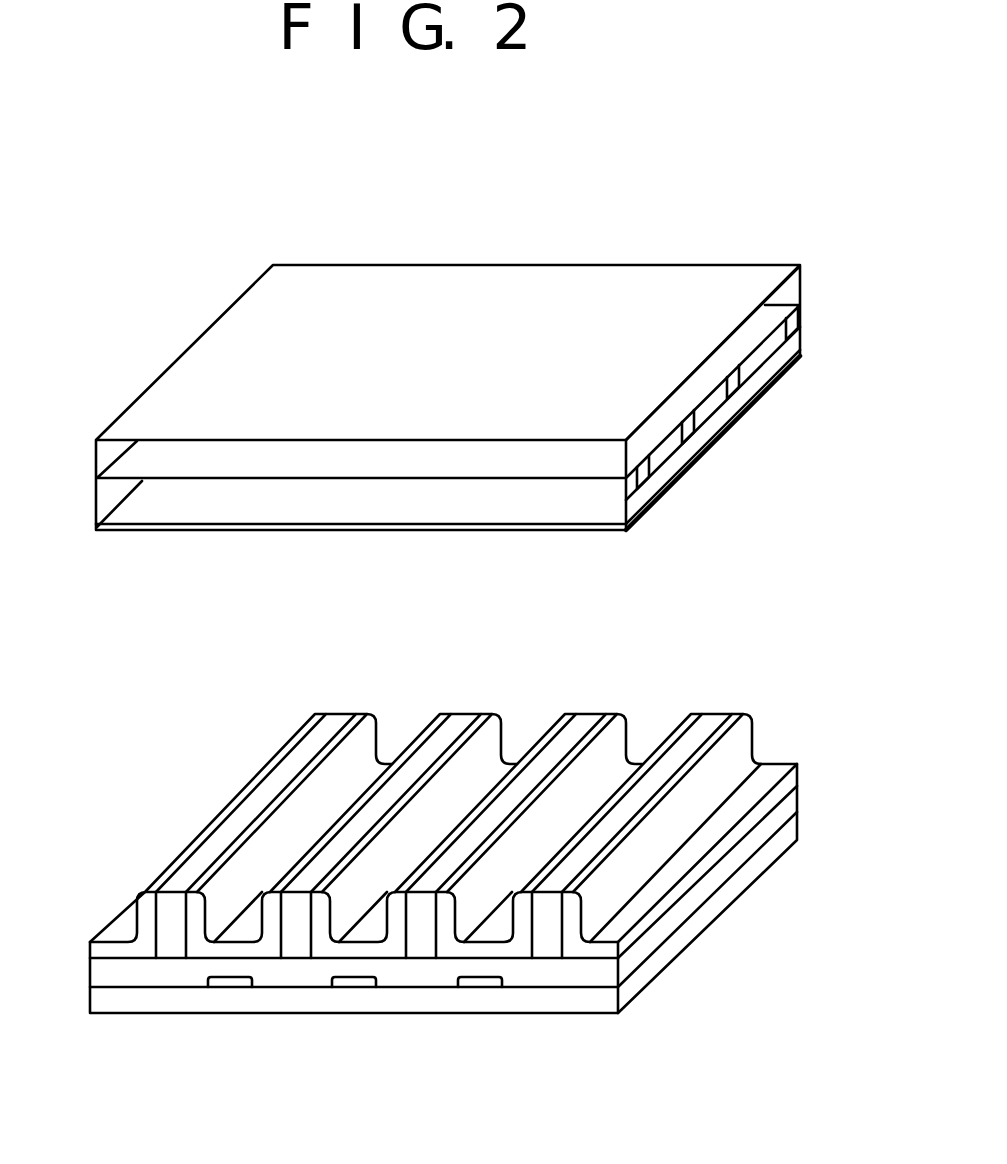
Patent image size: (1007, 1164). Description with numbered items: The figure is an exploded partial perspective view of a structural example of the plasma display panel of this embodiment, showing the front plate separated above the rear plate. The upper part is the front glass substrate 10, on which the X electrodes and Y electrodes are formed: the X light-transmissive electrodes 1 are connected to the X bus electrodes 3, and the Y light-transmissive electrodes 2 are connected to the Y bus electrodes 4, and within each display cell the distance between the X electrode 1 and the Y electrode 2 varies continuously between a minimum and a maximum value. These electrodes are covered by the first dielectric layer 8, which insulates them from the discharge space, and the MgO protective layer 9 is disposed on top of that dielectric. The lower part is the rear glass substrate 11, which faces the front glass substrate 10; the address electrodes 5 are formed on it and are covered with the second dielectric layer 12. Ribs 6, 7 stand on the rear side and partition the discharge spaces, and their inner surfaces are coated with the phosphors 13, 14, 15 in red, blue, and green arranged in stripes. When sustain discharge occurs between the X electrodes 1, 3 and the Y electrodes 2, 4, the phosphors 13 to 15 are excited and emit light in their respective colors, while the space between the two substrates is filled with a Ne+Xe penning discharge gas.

The X light-transmissive electrode 1 is at (775, 365).
The Y light-transmissive electrode 2 is at (755, 385).
The X bus electrode 3 is at (800, 345).
The Y bus electrode 4 is at (735, 395).
The address electrode 5 is at (230, 983).
The rib 6 is at (293, 950).
The rib 7 is at (168, 952).
The first dielectric layer 8 is at (797, 327).
The protective layer 9 is at (247, 530).
The front glass substrate 10 is at (163, 395).
The rear glass substrate 11 is at (103, 1007).
The second dielectric layer 12 is at (592, 975).
The phosphor 13 is at (200, 953).
The phosphor 14 is at (328, 953).
The phosphor 15 is at (453, 953).